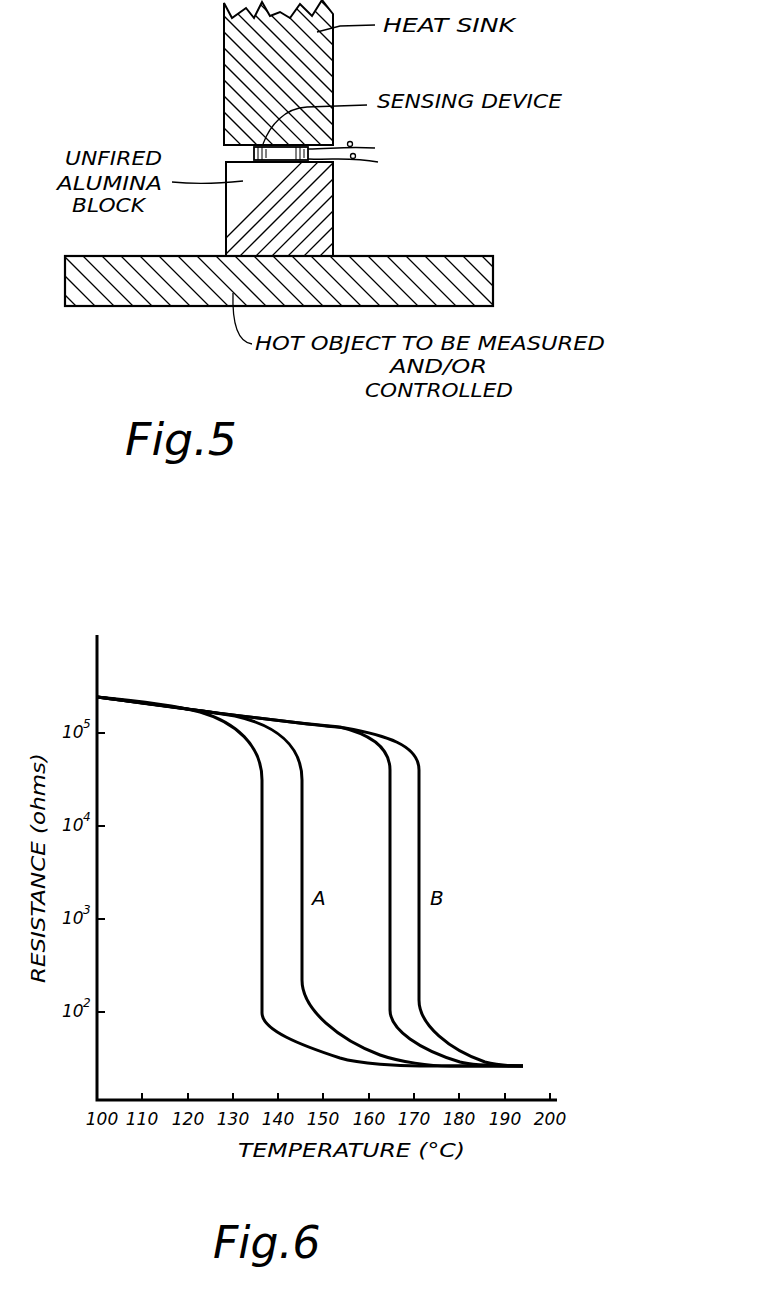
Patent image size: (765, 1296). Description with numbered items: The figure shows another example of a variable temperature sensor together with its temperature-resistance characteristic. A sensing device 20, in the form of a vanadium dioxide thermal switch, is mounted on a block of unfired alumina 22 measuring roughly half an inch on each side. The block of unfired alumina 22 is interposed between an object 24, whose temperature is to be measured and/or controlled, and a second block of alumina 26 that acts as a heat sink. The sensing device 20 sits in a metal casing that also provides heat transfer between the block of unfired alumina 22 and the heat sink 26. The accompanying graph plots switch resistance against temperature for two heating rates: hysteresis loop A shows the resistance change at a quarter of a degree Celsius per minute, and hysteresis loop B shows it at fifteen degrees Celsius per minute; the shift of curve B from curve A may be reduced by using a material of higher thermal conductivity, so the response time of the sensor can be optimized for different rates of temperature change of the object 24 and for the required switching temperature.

The sensing device 20 is at (282, 163).
The block of unfired alumina 22 is at (242, 220).
The object 24 is at (133, 295).
The second block of alumina 26 is at (323, 64).